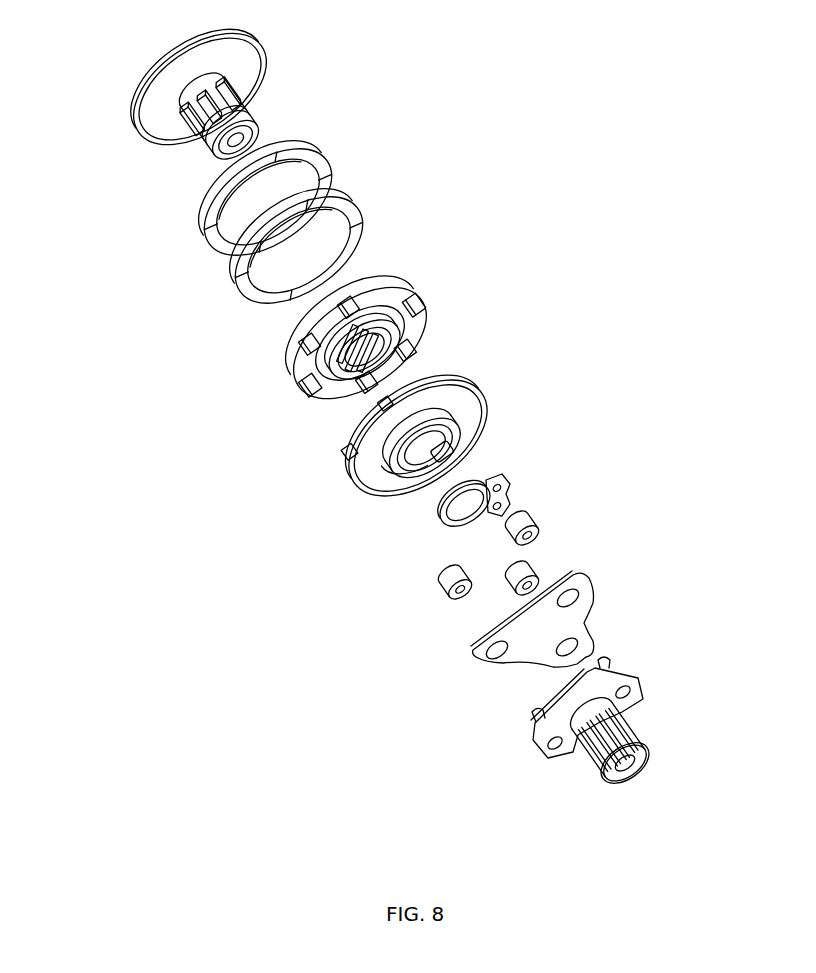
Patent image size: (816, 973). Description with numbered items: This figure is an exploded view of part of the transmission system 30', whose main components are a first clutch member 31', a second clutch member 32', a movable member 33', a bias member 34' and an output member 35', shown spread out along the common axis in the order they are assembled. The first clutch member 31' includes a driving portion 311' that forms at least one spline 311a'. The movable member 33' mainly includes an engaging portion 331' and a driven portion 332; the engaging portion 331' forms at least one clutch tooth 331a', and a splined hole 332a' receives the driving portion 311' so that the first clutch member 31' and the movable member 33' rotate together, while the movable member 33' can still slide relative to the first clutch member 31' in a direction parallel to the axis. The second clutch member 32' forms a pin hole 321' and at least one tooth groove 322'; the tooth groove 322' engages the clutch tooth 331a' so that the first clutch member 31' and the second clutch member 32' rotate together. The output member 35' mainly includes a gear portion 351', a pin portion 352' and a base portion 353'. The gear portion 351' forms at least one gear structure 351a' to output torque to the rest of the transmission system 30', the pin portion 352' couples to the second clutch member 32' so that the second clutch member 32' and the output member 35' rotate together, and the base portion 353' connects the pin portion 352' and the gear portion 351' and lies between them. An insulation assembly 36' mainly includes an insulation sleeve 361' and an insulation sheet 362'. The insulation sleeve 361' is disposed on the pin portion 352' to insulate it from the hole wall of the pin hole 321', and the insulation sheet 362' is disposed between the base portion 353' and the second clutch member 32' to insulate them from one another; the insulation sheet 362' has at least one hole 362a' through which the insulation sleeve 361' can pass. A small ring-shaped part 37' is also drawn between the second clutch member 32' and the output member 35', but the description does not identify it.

The transmission system 30' is at (412, 421).
The first clutch member 31' is at (247, 87).
The driving portion 311' is at (317, 116).
The spline 311a' is at (320, 106).
The bias member 34' is at (243, 222).
The movable member 33' is at (356, 337).
The engaging portion 331' is at (302, 337).
The clutch tooth 331a' is at (323, 343).
The driven portion 332 is at (378, 278).
The splined hole 332a' is at (444, 352).
The second clutch member 32' is at (379, 479).
The pin hole 321' is at (392, 502).
The tooth groove 322' is at (327, 428).
The clip ring 37' is at (523, 494).
The insulation assembly 36' is at (469, 609).
The insulation sleeve 361' is at (461, 567).
The insulation sheet 362' is at (489, 641).
The hole 362a' is at (474, 674).
The output member 35' is at (628, 715).
The gear portion 351' is at (632, 760).
The gear structure 351a' is at (594, 786).
The pin portion 352' is at (648, 640).
The base portion 353' is at (504, 746).